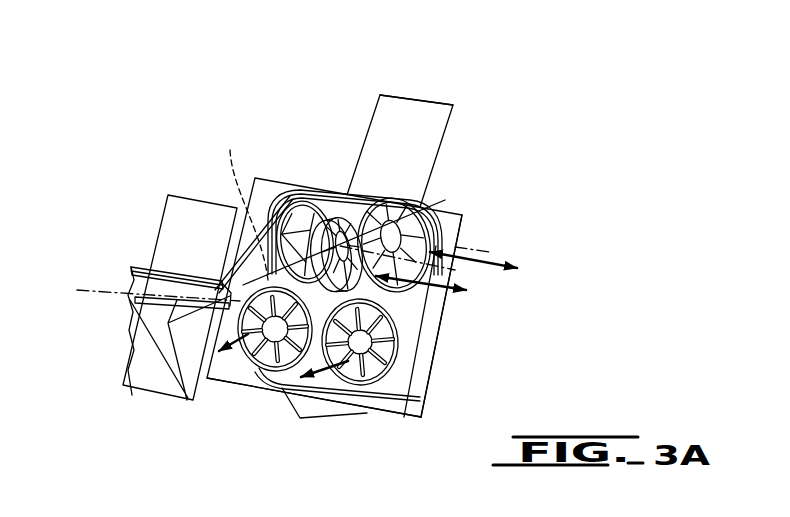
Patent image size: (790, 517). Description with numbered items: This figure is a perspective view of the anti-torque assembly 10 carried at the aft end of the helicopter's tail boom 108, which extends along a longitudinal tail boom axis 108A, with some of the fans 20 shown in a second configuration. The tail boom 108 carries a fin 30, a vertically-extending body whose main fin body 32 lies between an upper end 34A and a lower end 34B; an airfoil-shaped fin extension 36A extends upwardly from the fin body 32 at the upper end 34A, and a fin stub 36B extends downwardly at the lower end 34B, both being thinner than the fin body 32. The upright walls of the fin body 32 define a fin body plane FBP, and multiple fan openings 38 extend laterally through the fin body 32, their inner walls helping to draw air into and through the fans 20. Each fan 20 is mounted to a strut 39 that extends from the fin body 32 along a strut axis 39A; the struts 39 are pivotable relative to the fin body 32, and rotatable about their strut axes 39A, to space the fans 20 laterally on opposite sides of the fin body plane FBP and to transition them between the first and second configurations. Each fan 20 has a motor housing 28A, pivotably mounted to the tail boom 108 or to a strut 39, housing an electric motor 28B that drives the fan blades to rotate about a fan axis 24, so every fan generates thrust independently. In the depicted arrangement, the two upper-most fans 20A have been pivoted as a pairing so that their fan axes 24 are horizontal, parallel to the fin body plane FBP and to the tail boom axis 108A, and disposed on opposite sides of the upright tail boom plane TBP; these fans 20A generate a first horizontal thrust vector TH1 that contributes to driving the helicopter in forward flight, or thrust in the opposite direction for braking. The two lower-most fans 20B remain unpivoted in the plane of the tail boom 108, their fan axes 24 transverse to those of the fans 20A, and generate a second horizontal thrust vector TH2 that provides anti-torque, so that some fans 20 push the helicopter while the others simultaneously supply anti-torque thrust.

The anti-torque assembly 10 is at (478, 118).
The fan 20 is at (307, 208).
The upper-most fans 20A is at (413, 196).
The lower-most fans 20B is at (245, 328).
The fan axis 24 is at (490, 258).
The motor housing 28A is at (339, 212).
The electric motor 28B is at (371, 212).
The fin 30 is at (449, 228).
The fin body 32 is at (417, 332).
The upper end of the fin 34A is at (458, 96).
The lower end of the fin 34B is at (305, 422).
The fin extension 36A is at (386, 200).
The fin stub 36B is at (327, 407).
The fan opening 38 is at (304, 191).
The strut 39 is at (313, 194).
The strut axis 39A is at (241, 211).
The tail boom 108 is at (143, 270).
The tail boom axis 108A is at (88, 289).
The fin body plane FBP is at (272, 178).
The tail boom plane TBP is at (187, 197).
The first horizontal thrust vector TH1 is at (518, 268).
The second horizontal thrust vector TH2 is at (267, 358).